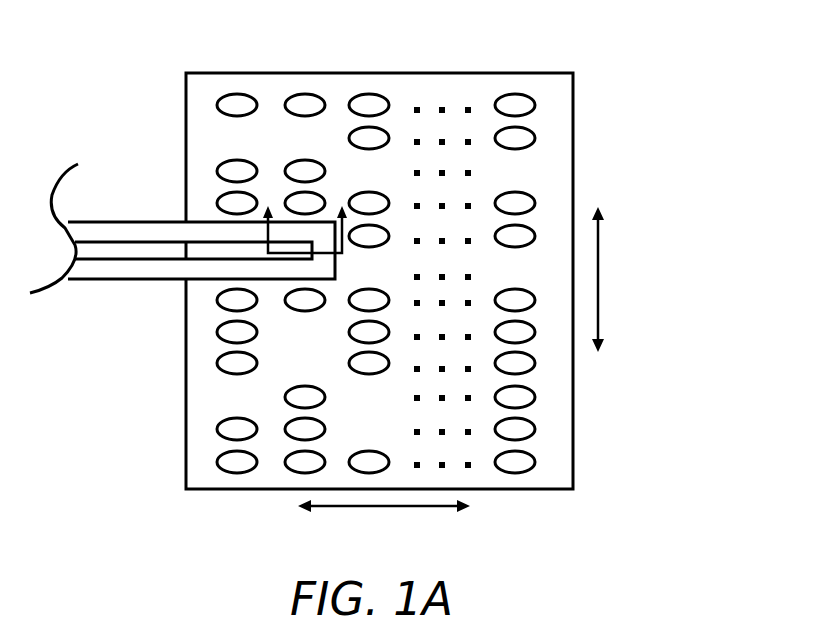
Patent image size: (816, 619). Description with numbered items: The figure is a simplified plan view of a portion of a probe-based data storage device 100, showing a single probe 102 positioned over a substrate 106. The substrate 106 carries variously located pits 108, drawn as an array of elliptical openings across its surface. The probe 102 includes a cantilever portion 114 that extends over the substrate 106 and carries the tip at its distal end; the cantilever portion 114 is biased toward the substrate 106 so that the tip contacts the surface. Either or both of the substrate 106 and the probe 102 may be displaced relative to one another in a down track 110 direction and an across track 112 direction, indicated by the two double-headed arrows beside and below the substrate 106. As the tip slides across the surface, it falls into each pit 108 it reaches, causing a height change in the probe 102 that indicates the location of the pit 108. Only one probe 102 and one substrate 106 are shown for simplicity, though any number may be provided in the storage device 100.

The probe-based data storage device 100 is at (611, 76).
The probe 102 is at (120, 221).
The substrate 106 is at (366, 72).
The pits 108 is at (241, 94).
The down track direction 110 is at (599, 262).
The across track direction 112 is at (418, 507).
The cantilever portion 114 is at (113, 280).